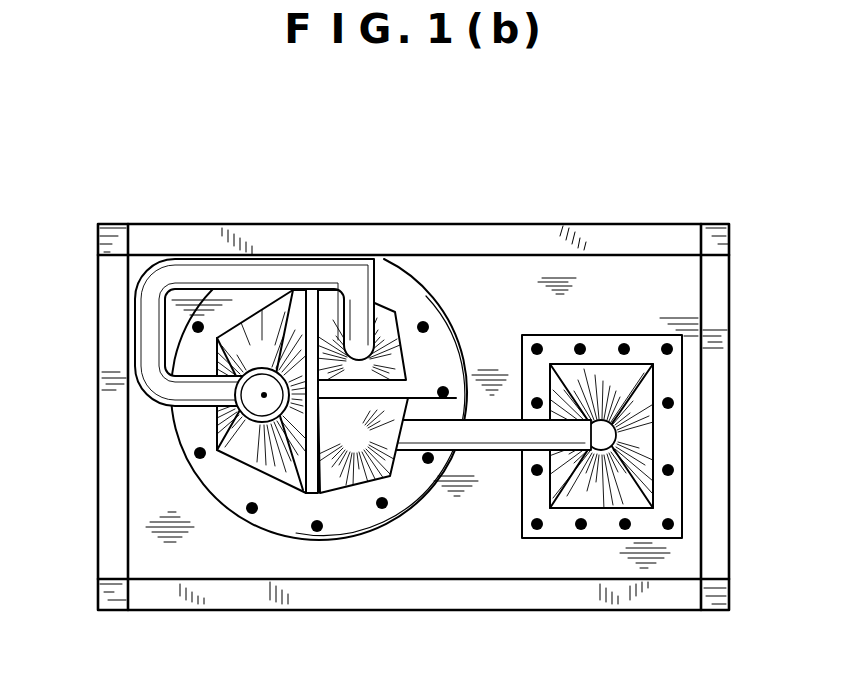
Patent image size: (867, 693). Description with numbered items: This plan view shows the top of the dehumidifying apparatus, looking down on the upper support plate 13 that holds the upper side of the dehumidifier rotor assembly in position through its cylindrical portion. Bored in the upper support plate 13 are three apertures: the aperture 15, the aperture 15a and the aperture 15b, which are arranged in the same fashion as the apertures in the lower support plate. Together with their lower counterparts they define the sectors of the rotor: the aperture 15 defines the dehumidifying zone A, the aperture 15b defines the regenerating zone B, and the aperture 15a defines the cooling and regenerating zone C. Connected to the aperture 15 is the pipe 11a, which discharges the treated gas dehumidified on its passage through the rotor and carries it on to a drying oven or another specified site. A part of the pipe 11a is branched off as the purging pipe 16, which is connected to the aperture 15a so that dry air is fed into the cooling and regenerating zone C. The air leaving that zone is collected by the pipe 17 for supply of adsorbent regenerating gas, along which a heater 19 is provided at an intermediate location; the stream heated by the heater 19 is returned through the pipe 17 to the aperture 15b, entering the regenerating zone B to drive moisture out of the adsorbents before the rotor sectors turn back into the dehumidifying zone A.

The pipe for discharge of treated gas 11a is at (261, 400).
The upper support plate 13 is at (383, 283).
The aperture 15 is at (215, 432).
The aperture 15a is at (395, 350).
The aperture 15b is at (376, 451).
The purging pipe 16 is at (162, 262).
The pipe for supply of adsorbent regenerating gas 17 is at (493, 451).
The heater 19 is at (616, 439).
The dehumidifying zone A is at (281, 497).
The regenerating zone B is at (349, 522).
The cooling and regenerating zone C is at (410, 364).